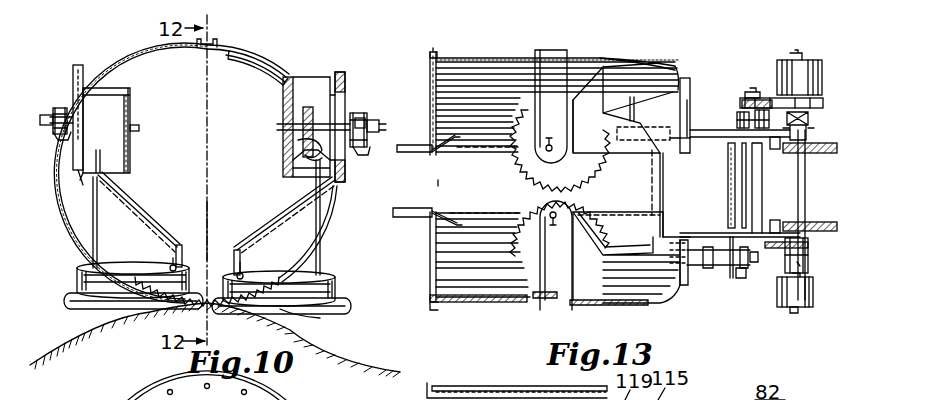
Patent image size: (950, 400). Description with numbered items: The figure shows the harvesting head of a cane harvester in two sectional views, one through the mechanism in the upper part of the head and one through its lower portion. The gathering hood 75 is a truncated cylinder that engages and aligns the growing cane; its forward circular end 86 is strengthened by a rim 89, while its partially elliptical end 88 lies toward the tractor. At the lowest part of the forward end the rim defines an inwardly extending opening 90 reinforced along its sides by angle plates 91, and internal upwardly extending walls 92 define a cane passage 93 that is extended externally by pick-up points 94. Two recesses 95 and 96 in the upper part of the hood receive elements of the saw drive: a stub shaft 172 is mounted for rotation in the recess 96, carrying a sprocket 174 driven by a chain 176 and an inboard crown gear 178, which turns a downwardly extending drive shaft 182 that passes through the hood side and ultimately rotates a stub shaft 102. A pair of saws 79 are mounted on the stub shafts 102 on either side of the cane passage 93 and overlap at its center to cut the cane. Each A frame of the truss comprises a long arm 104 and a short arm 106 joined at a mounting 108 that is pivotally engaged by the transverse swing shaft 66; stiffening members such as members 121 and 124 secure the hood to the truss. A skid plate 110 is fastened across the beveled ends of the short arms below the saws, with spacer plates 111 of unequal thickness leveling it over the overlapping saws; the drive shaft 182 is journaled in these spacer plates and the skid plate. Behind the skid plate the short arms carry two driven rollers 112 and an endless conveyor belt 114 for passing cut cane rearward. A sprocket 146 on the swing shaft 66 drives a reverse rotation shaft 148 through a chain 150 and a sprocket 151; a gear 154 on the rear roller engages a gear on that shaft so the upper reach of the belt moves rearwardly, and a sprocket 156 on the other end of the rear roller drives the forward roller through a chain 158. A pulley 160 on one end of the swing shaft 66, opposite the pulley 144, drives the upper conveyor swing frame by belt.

In FIG. 13, the transverse swing shaft 66 is at (806, 192).
In FIG. 10, the gathering hood 75 is at (180, 62).
In FIG. 13, the gathering hood 75 is at (508, 60).
In FIG. 10, the saws 79 is at (152, 302).
In FIG. 13, the saws 79 is at (520, 161).
In FIG. 13, the circular end 86 is at (433, 97).
In FIG. 13, the partially elliptical end 88 is at (676, 68).
In FIG. 13, the rim 89 is at (430, 53).
In FIG. 13, the opening 90 is at (438, 182).
In FIG. 13, the angle plates 91 is at (420, 150).
In FIG. 10, the internal upwardly extending walls 92 is at (178, 257).
In FIG. 13, the internal upwardly extending walls 92 is at (643, 157).
In FIG. 10, the cane passage 93 is at (208, 245).
In FIG. 13, the pick-up points 94 is at (397, 237).
In FIG. 10, the recess 95 is at (118, 105).
In FIG. 10, the recess 96 is at (300, 90).
In FIG. 10, the stub shafts 102 is at (246, 272).
In FIG. 13, the stub shafts 102 is at (557, 180).
In FIG. 13, the long arm 104 is at (783, 248).
In FIG. 13, the short arm 106 is at (775, 150).
In FIG. 13, the mounting 108 is at (810, 247).
In FIG. 10, the skid plate 110 is at (282, 311).
In FIG. 13, the skid plate 110 is at (657, 188).
In FIG. 10, the spacer plates 111 is at (74, 297).
In FIG. 13, the spacer plates 111 is at (688, 78).
In FIG. 13, the driven rollers 112 is at (730, 150).
In FIG. 13, the conveyor belt 114 is at (698, 157).
In FIG. 10, the stiffening member 121 is at (76, 176).
In FIG. 10, the stiffening member 124 is at (80, 66).
In FIG. 13, the pulley 144 is at (823, 82).
In FIG. 13, the sprocket 146 is at (824, 101).
In FIG. 13, the reverse rotation shaft 148 is at (760, 186).
In FIG. 13, the chain 150 is at (771, 98).
In FIG. 13, the sprocket 151 is at (748, 92).
In FIG. 13, the gear 154 is at (728, 120).
In FIG. 13, the sprocket 156 is at (740, 278).
In FIG. 13, the chain 158 is at (710, 265).
In FIG. 13, the pulley 160 is at (814, 292).
In FIG. 10, the stub shaft 172 is at (142, 131).
In FIG. 10, the sprocket 174 is at (56, 118).
In FIG. 10, the chain 176 is at (62, 140).
In FIG. 10, the crown gear 178 is at (308, 107).
In FIG. 10, the drive shaft 182 is at (93, 249).
In FIG. 13, the drive shaft 182 is at (540, 299).